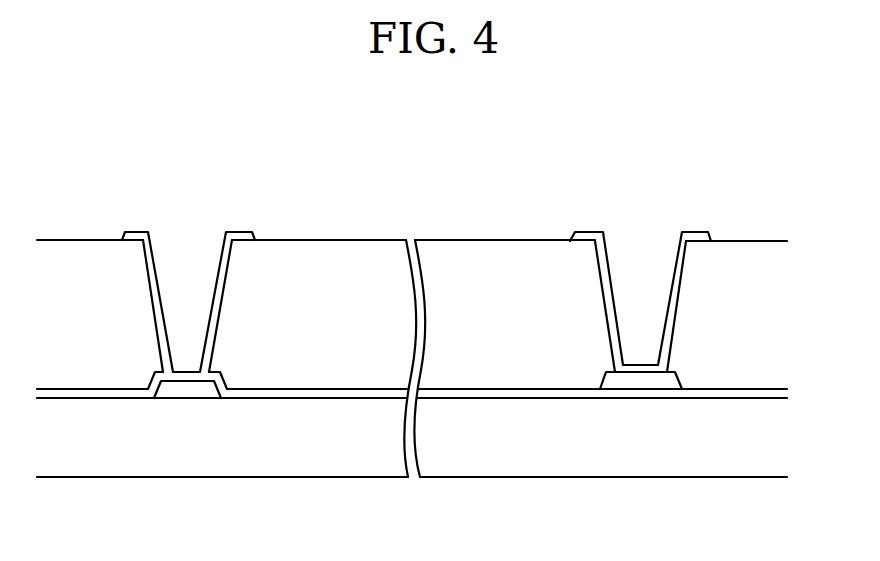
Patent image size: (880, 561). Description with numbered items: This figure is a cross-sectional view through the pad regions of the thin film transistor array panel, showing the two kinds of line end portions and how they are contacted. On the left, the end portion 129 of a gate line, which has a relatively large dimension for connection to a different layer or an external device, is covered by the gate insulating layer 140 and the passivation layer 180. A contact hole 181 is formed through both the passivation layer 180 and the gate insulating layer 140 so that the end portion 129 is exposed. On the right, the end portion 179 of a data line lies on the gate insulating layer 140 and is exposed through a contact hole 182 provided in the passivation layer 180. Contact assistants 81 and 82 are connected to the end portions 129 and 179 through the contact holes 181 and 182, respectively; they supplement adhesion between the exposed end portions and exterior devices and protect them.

The contact assistant 81 is at (241, 233).
The contact assistant 82 is at (697, 233).
The end portion of the gate line 129 is at (190, 392).
The gate insulating layer 140 is at (92, 390).
The end portion of the data line 179 is at (642, 383).
The passivation layer 180 is at (323, 363).
The contact hole 181 is at (149, 275).
The contact hole 182 is at (602, 280).